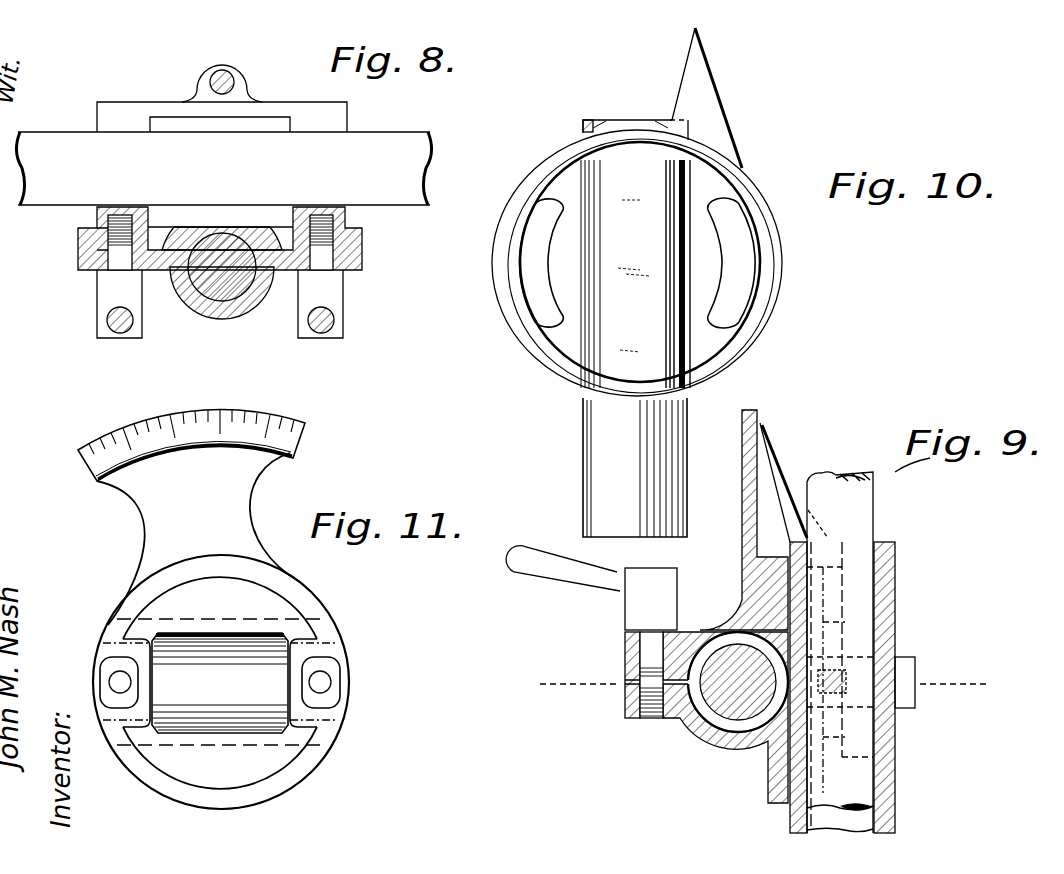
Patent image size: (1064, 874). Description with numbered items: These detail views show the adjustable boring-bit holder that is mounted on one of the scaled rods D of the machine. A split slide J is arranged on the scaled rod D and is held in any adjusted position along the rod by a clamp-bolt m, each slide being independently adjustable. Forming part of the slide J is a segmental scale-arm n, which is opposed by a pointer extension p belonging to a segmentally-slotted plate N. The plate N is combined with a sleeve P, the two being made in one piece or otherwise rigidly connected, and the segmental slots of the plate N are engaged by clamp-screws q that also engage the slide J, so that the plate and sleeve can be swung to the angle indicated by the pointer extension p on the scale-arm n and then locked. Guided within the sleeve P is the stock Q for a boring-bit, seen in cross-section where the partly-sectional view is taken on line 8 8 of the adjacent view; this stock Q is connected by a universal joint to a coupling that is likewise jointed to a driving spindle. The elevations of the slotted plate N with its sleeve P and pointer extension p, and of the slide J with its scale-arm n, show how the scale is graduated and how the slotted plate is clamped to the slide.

In FIG. 8, the scaled rod D is at (223, 168).
In FIG. 9, the scaled rod D is at (706, 717).
In FIG. 8, the split slide J is at (337, 118).
In FIG. 9, the split slide J is at (742, 590).
In FIG. 11, the split slide J is at (108, 647).
In FIG. 8, the clamp-bolt m is at (234, 80).
In FIG. 9, the clamp-bolt m is at (645, 645).
In FIG. 8, the segmentally-slotted plate N is at (362, 262).
In FIG. 10, the segmentally-slotted plate N is at (530, 358).
In FIG. 9, the segmentally-slotted plate N is at (790, 812).
In FIG. 8, the sleeve P is at (222, 318).
In FIG. 10, the sleeve P is at (600, 441).
In FIG. 9, the sleeve P is at (895, 600).
In FIG. 8, the stock for boring-bit Q is at (222, 267).
In FIG. 9, the stock for boring-bit Q is at (840, 652).
In FIG. 8, the clamp-screw q is at (363, 292).
In FIG. 10, the pointer extension p is at (712, 113).
In FIG. 9, the pointer extension p is at (786, 462).
In FIG. 9, the segmental scale-arm n is at (757, 413).
In FIG. 11, the segmental scale-arm n is at (213, 609).
In FIG. 9, the section line 8 8 is at (763, 686).